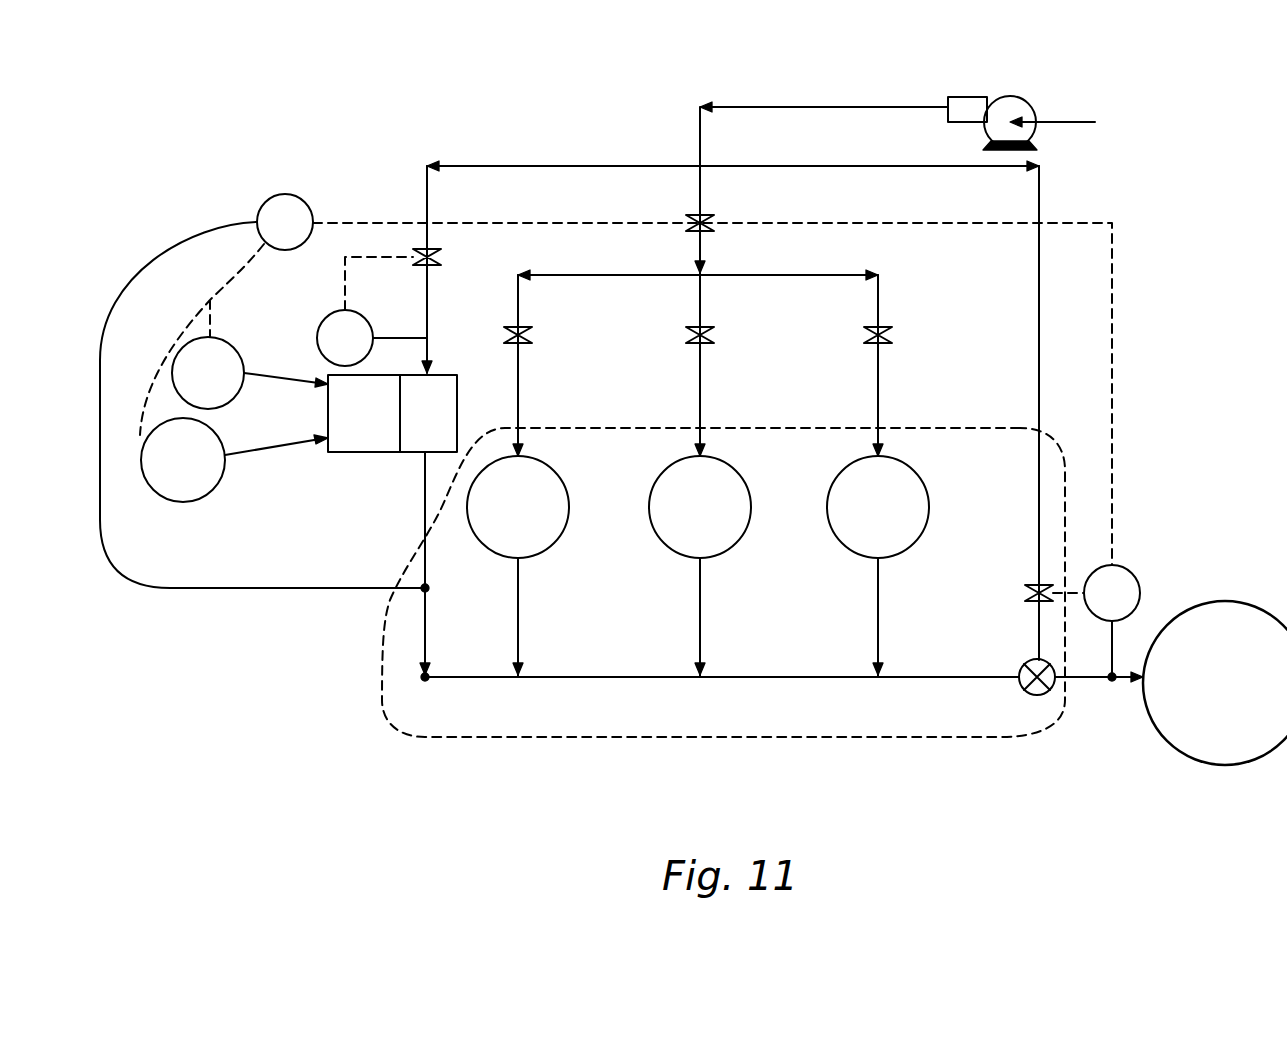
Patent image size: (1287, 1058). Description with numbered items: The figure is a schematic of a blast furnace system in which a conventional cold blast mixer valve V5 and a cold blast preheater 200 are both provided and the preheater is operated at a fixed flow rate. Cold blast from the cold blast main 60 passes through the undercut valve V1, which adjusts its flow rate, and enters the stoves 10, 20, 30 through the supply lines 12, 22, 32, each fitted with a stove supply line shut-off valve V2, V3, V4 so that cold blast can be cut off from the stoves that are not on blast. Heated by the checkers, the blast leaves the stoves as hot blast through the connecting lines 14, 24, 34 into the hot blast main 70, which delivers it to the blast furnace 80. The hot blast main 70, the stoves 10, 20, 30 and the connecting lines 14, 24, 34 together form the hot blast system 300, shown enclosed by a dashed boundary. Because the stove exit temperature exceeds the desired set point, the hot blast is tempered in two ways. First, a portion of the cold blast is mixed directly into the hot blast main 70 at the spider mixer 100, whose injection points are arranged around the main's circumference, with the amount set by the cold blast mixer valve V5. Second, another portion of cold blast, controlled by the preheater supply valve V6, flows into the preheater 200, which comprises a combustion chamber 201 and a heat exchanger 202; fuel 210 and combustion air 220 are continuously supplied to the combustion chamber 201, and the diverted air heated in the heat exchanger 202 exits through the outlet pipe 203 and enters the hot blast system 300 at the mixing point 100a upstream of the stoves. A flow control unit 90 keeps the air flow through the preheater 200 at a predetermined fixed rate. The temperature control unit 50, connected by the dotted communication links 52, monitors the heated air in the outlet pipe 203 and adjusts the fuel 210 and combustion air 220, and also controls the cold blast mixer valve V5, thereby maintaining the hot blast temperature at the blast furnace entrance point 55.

The stove 10 is at (506, 521).
The stove 20 is at (688, 521).
The stove 30 is at (866, 521).
The supply line 12 is at (522, 386).
The supply line 22 is at (702, 386).
The supply line 32 is at (880, 386).
The connecting line 14 is at (522, 615).
The connecting line 24 is at (702, 615).
The connecting line 34 is at (880, 615).
The temperature control unit 50 is at (285, 194).
The communication link 52 is at (235, 271).
The blast furnace entrance point 55 is at (1112, 690).
The cold blast main 60 is at (700, 129).
The hot blast main 70 is at (808, 690).
The blast furnace 80 is at (1242, 602).
The flow control unit 90 is at (331, 312).
The spider mixer 100 is at (1037, 697).
The mixing point 100a is at (425, 690).
The cold blast preheater 200 is at (386, 468).
The combustion chamber 201 is at (346, 425).
The heat exchanger 202 is at (410, 425).
The outlet pipe 203 is at (425, 628).
The fuel 210 is at (240, 345).
The combustion air 220 is at (175, 502).
The hot blast system 300 is at (572, 738).
The undercut valve V1 is at (706, 214).
The stove supply line shut-off valve V2 is at (526, 330).
The stove supply line shut-off valve V3 is at (710, 330).
The stove supply line shut-off valve V4 is at (888, 330).
The cold blast mixer valve V5 is at (1030, 586).
The preheater supply valve V6 is at (438, 255).